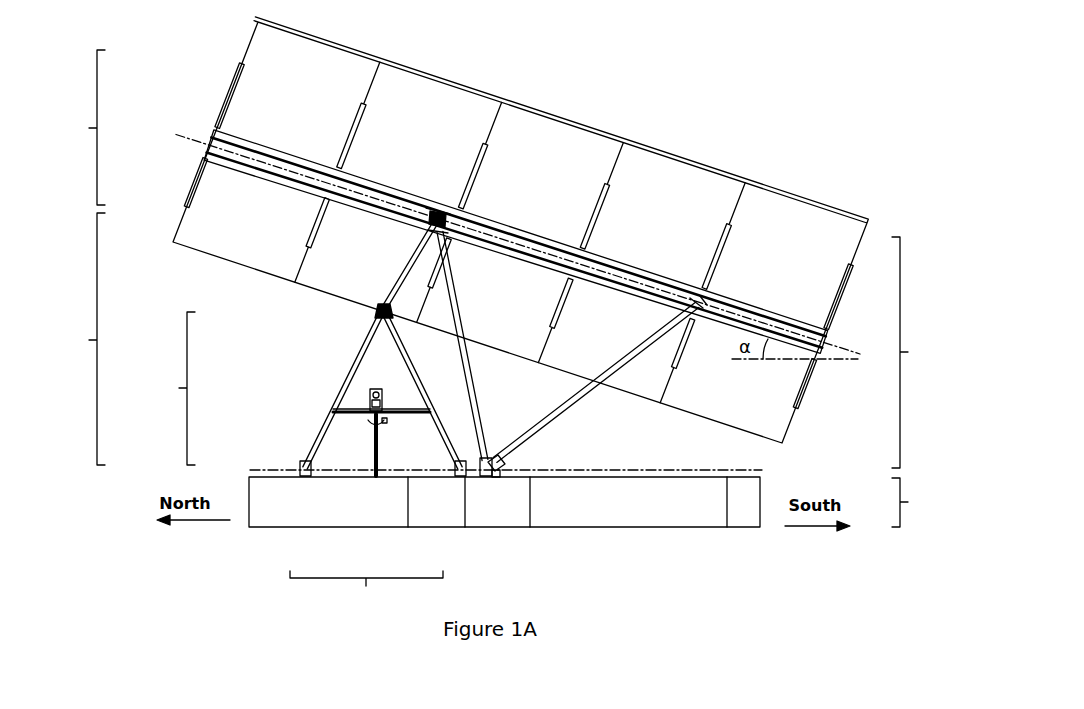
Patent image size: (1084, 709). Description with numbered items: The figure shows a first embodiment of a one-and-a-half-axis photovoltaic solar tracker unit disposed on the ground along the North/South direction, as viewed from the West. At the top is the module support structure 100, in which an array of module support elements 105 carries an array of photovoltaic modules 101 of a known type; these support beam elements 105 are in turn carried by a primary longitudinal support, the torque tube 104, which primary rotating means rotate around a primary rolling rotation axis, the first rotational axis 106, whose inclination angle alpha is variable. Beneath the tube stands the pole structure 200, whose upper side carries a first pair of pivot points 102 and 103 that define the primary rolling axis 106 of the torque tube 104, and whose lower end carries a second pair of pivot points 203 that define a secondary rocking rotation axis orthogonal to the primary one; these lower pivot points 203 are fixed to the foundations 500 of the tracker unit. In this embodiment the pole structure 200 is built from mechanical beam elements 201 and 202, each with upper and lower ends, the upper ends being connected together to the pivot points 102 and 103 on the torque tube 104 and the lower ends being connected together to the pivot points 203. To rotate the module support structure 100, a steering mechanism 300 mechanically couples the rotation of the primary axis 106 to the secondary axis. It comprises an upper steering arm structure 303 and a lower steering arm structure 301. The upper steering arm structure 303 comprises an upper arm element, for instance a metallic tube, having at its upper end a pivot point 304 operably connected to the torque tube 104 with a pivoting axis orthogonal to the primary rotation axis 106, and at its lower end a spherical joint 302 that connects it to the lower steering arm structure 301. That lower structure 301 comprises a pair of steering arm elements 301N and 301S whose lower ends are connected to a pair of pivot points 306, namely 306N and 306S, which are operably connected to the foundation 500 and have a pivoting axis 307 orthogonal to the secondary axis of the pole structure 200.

The module support structure 100 is at (72, 127).
The photovoltaic modules 101 is at (647, 222).
The first pivot point 102 is at (730, 298).
The second pivot point 103 is at (452, 198).
The torque tube 104 is at (794, 314).
The module support elements 105 is at (240, 66).
The first rotational axis 106 is at (186, 136).
The pole structure 200 is at (926, 352).
The mechanical beam element 201 is at (560, 411).
The mechanical beam element 202 is at (469, 367).
The pivot point 203 is at (492, 478).
The steering mechanism 300 is at (72, 339).
The lower steering arm structure 301 is at (281, 394).
The steering arm element 301N is at (345, 390).
The steering arm element 301S is at (407, 362).
The spherical joint 302 is at (376, 311).
The upper steering arm structure 303 is at (396, 276).
The pivot point 304 is at (433, 210).
The pivot points 306 is at (504, 549).
The pivot point 306N is at (310, 478).
The pivot point 306S is at (448, 478).
The pivoting axis 307 is at (290, 466).
The foundations 500 is at (926, 502).